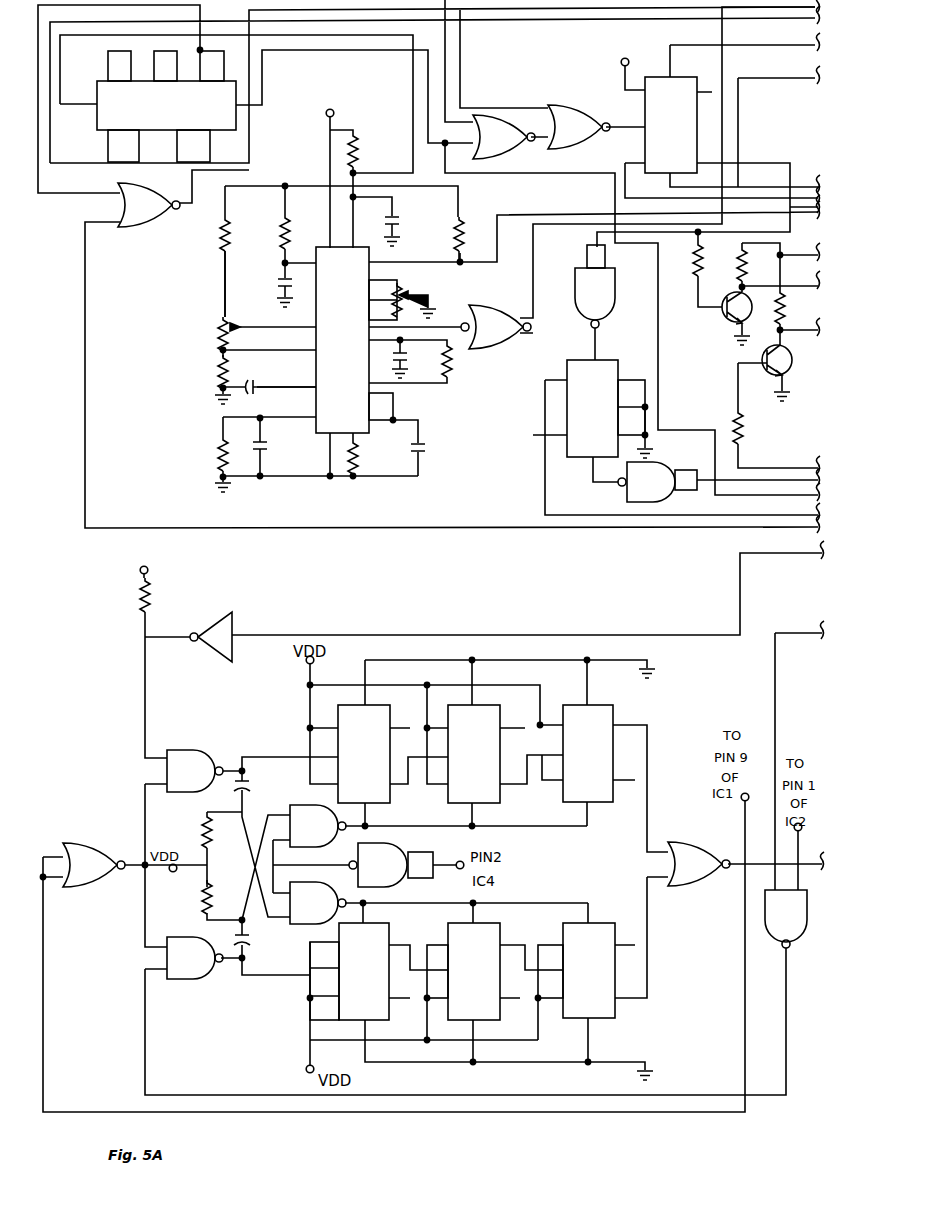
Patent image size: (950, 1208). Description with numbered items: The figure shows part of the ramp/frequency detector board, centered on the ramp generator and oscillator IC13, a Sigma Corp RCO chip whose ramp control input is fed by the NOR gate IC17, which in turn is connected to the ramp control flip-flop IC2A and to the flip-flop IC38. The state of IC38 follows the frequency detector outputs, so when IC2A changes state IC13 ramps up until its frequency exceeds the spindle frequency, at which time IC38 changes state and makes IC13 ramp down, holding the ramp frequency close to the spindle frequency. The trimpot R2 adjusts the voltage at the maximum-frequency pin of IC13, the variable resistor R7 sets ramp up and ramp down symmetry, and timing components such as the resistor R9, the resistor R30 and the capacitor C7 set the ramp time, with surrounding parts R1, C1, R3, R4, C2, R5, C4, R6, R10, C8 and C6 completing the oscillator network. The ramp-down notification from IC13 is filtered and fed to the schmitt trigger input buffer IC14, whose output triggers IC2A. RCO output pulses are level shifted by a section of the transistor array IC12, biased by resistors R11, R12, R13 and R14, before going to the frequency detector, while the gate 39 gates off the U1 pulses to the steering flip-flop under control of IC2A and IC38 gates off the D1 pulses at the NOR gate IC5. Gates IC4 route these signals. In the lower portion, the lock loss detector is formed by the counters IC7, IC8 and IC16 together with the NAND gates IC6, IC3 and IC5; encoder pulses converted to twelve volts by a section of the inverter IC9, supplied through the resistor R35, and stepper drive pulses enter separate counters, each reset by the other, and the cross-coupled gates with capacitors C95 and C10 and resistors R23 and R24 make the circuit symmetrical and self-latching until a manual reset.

The schmitt trigger input buffer IC14 is at (161, 106).
The NOR gate IC17 is at (315, 273).
The resistor R3 1.5K R3 is at (203, 251).
The resistor R4 221K R4 is at (274, 226).
The capacitor C2 .01uf C2 is at (269, 285).
The resistor R5 4.7M R5 is at (369, 125).
The capacitor C4 .0018uf C4 is at (378, 230).
The resistor R6 10K R6 is at (475, 231).
The NOR gate IC4 is at (534, 128).
The ramp control flip-flop IC2A is at (658, 116).
The resistor R11 10K R11 is at (693, 269).
The resistor R12 3K R12 is at (764, 267).
The resistor R14 3K R14 is at (796, 317).
The level shifter IC12 is at (751, 342).
The resistor R13 10K R13 is at (775, 415).
The gate IC39 39 is at (692, 381).
The flip-flop IC38 is at (681, 437).
The ramp generator and oscillator IC13 is at (320, 361).
The potentiometer R7 5K ramp symmetry R7 is at (437, 294).
The resistor R9 374K R9 is at (430, 360).
The capacitor C6 .01uf C6 is at (417, 360).
The resistor R30 10K R30 is at (377, 459).
The capacitor C7 .22uf polycarbonate C7 is at (412, 464).
The trimpot R2 is at (202, 306).
The resistor R1 4.75K R1 is at (194, 380).
The capacitor C1 .005uf C1 is at (269, 390).
The resistor R10 100K R10 is at (197, 454).
The capacitor C8 .01uf C8 is at (273, 446).
The resistor R35 10K R35 is at (139, 593).
The level converter IC9 is at (209, 637).
The lock loss detector gate IC6 is at (264, 873).
The capacitor C95 .1uf C95 is at (257, 786).
The resistor R23 10K R23 is at (186, 831).
The resistor R24 10K R24 is at (187, 898).
The capacitor C10 .1uf C10 is at (259, 952).
The gate IC5 is at (389, 868).
The gate IC3 is at (580, 897).
The counter flip-flop IC16 is at (361, 862).
The counter flip-flop IC7 is at (536, 755).
The counter flip-flop IC8 is at (533, 972).